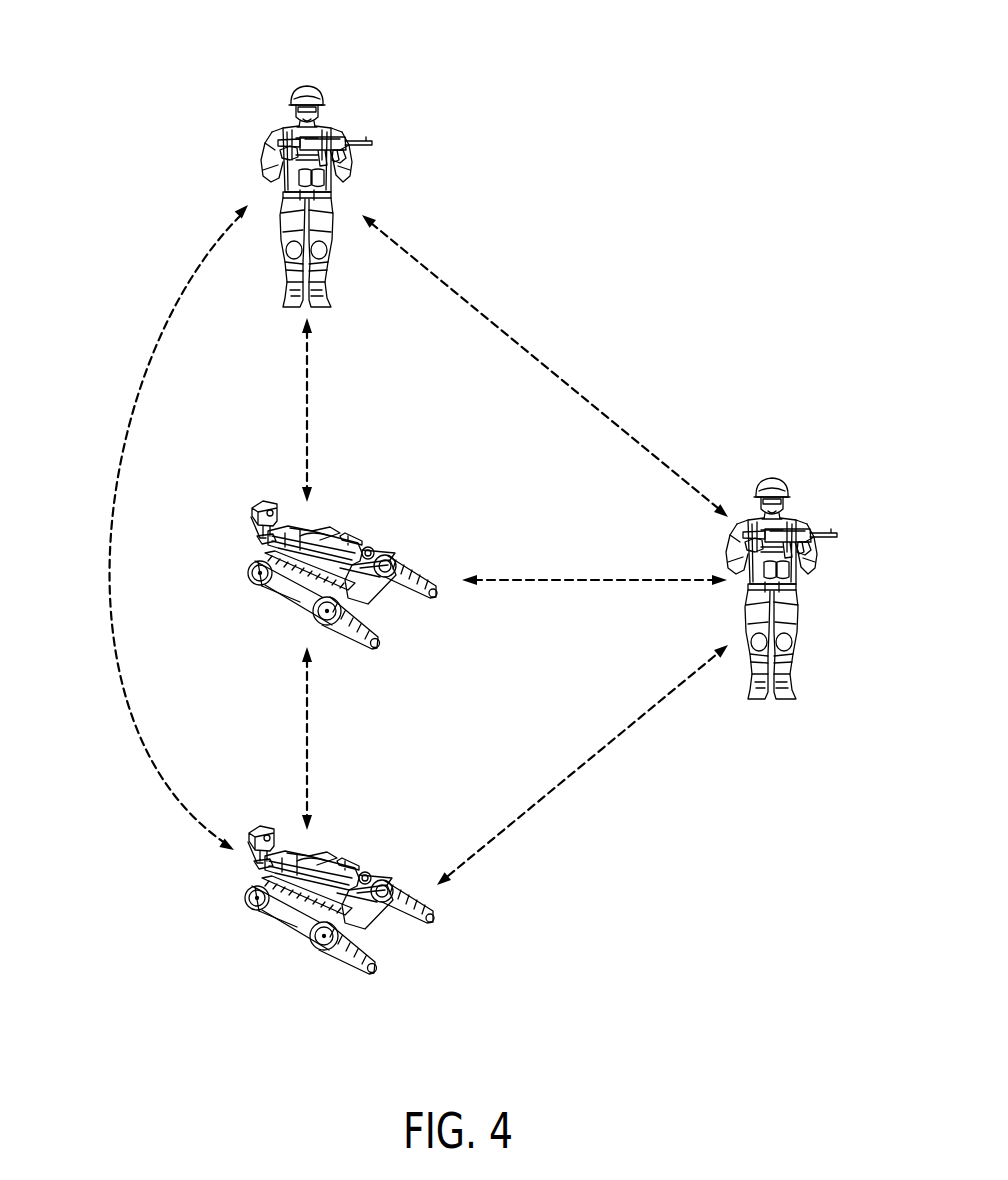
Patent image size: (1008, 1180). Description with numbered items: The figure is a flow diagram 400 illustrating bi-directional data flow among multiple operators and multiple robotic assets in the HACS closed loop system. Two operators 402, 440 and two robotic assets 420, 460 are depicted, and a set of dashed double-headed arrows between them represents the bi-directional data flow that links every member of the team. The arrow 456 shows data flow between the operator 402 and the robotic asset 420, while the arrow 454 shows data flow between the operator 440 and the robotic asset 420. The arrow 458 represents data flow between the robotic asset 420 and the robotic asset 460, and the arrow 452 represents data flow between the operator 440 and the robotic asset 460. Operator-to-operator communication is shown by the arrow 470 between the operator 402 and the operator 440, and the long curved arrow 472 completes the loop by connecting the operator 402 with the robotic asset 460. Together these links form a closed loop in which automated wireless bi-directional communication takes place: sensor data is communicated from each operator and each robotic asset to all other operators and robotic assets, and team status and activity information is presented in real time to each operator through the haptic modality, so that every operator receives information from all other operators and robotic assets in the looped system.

The flow diagram 400 is at (733, 100).
The operator 402 is at (352, 95).
The operator 440 is at (798, 470).
The robotic asset 420 is at (353, 510).
The robotic asset 460 is at (338, 838).
The bi-directional data flow 456 is at (308, 407).
The bi-directional data flow 458 is at (308, 727).
The bi-directional data flow 454 is at (528, 579).
The bi-directional data flow 470 is at (522, 346).
The bi-directional data flow 452 is at (572, 774).
The bi-directional data flow 472 is at (146, 385).